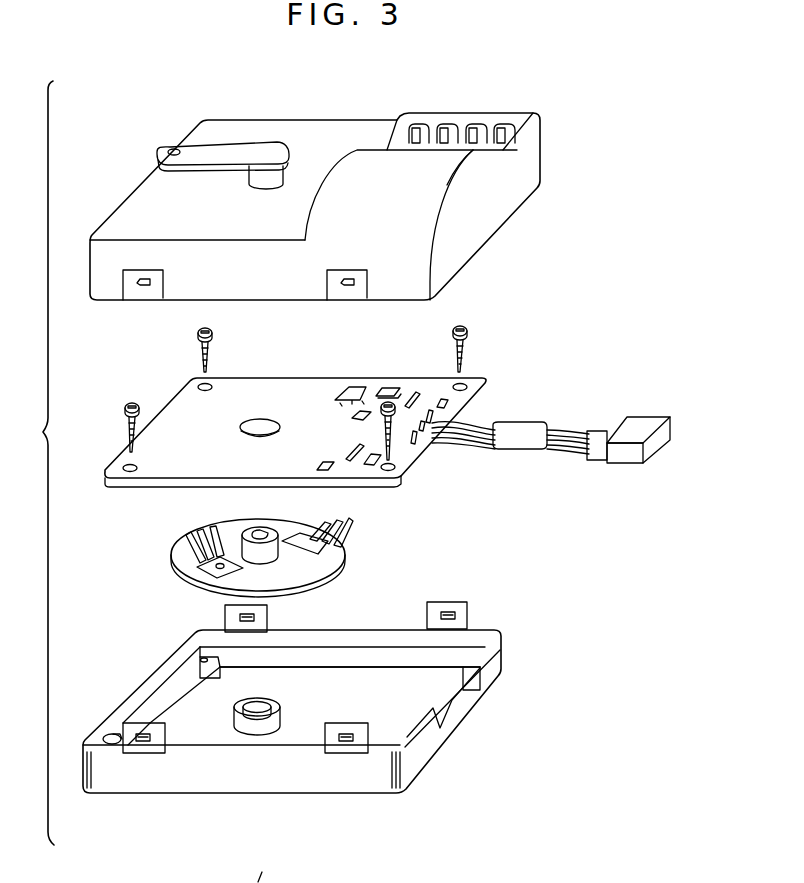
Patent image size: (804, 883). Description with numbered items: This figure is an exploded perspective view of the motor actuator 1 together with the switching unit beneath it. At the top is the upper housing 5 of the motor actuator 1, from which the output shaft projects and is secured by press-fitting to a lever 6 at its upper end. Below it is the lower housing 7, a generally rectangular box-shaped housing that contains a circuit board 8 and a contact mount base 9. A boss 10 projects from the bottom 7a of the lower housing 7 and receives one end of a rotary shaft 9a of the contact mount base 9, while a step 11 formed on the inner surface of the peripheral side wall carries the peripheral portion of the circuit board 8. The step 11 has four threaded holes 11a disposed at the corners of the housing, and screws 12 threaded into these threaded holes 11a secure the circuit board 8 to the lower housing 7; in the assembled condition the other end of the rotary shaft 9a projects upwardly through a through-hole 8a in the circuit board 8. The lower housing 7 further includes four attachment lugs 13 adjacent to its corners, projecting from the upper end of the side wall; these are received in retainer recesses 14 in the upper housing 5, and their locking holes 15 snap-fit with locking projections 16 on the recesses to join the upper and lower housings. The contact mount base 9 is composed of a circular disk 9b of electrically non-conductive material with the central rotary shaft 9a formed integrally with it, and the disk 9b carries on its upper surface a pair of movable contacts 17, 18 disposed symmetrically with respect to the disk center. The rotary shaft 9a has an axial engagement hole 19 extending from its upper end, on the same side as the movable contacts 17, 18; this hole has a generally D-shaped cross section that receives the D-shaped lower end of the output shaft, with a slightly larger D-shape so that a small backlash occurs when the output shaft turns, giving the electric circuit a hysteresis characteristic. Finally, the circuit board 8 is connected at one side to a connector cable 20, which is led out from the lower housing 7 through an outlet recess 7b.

The motor actuator 1 is at (338, 211).
The upper housing 5 is at (318, 132).
The lever 6 is at (232, 150).
The lower housing 7 is at (280, 708).
The bottom 7a is at (197, 705).
The outlet recess 7b is at (447, 705).
The circuit board 8 is at (295, 448).
The through-hole 8a is at (247, 433).
The contact mount base 9 is at (264, 547).
The rotary shaft 9a is at (281, 552).
The circular disk 9b is at (341, 553).
The boss 10 is at (283, 717).
The step 11 is at (322, 657).
The threaded holes 11a is at (197, 657).
The screws 12 is at (213, 333).
The attachment lugs 13 is at (104, 737).
The retainer recesses 14 is at (137, 292).
The locking holes 15 is at (137, 730).
The locking projections 16 is at (150, 297).
The movable contact 17 is at (200, 567).
The movable contact 18 is at (298, 534).
The engagement hole 19 is at (261, 530).
The connector cable 20 is at (570, 430).